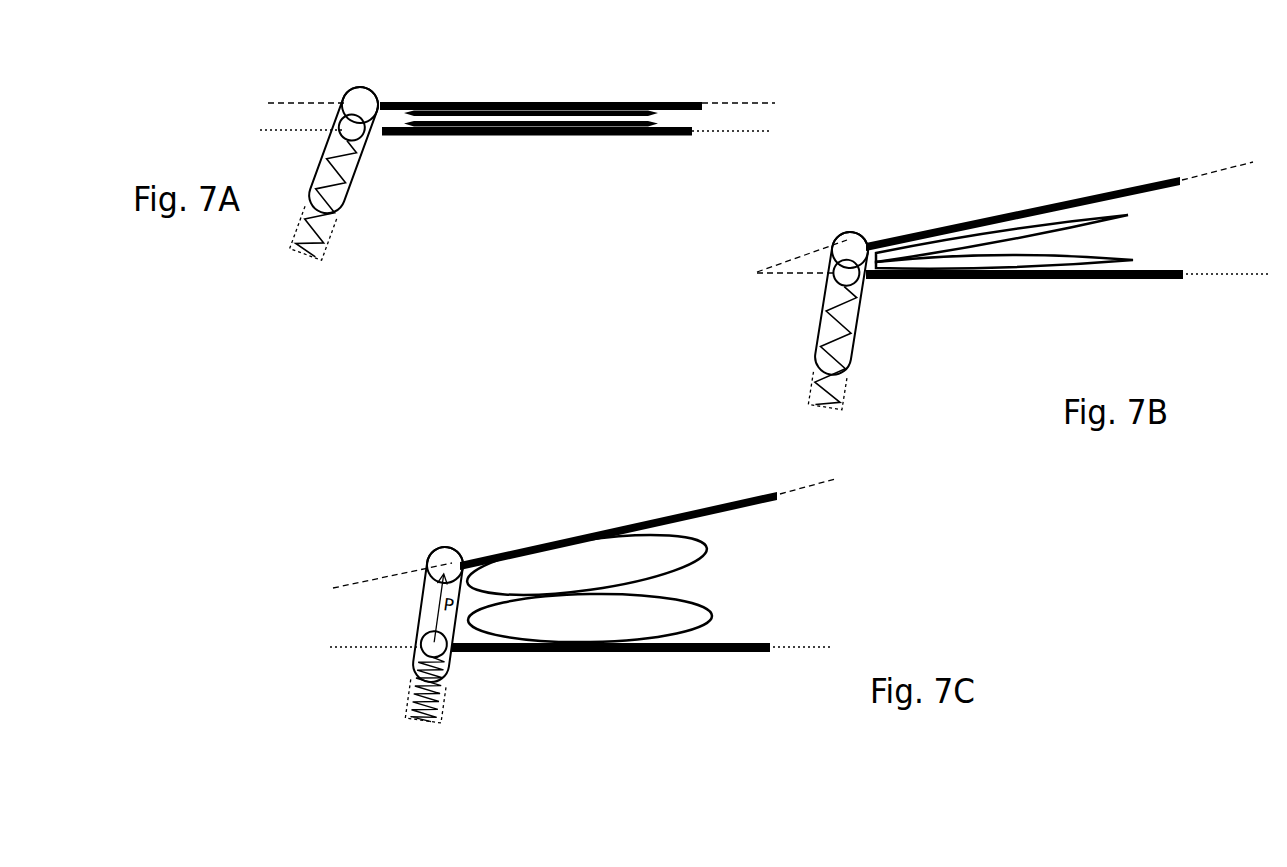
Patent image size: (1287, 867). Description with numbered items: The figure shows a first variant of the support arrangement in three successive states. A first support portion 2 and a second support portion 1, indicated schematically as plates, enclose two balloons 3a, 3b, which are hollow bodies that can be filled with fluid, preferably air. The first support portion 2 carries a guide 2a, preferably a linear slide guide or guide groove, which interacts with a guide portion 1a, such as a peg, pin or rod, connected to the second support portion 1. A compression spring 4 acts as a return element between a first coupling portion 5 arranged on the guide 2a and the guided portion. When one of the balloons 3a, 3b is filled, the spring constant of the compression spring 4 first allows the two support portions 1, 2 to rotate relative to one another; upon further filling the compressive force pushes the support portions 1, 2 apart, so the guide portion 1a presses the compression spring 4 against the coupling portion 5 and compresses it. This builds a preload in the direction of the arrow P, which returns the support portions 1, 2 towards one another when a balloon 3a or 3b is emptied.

In FIG. 7A, the second support portion 1 is at (503, 135).
In FIG. 7B, the second support portion 1 is at (957, 279).
In FIG. 7C, the second support portion 1 is at (660, 651).
In FIG. 7A, the guide portion 1a is at (363, 139).
In FIG. 7B, the guide portion 1a is at (865, 302).
In FIG. 7C, the guide portion 1a is at (441, 650).
In FIG. 7A, the first support portion 2 is at (517, 102).
In FIG. 7B, the first support portion 2 is at (1003, 212).
In FIG. 7C, the first support portion 2 is at (657, 516).
In FIG. 7A, the guide 2a is at (344, 103).
In FIG. 7B, the guide 2a is at (822, 350).
In FIG. 7C, the guide 2a is at (425, 590).
In FIG. 7A, the balloon 3a is at (588, 112).
In FIG. 7B, the balloon 3a is at (1130, 217).
In FIG. 7C, the balloon 3a is at (712, 548).
In FIG. 7A, the balloon 3b is at (553, 122).
In FIG. 7B, the balloon 3b is at (1134, 261).
In FIG. 7C, the balloon 3b is at (714, 617).
In FIG. 7A, the compression spring 4 is at (323, 243).
In FIG. 7B, the compression spring 4 is at (857, 340).
In FIG. 7C, the compression spring 4 is at (440, 713).
In FIG. 7A, the first coupling portion 5 is at (297, 259).
In FIG. 7B, the first coupling portion 5 is at (817, 380).
In FIG. 7C, the first coupling portion 5 is at (407, 713).